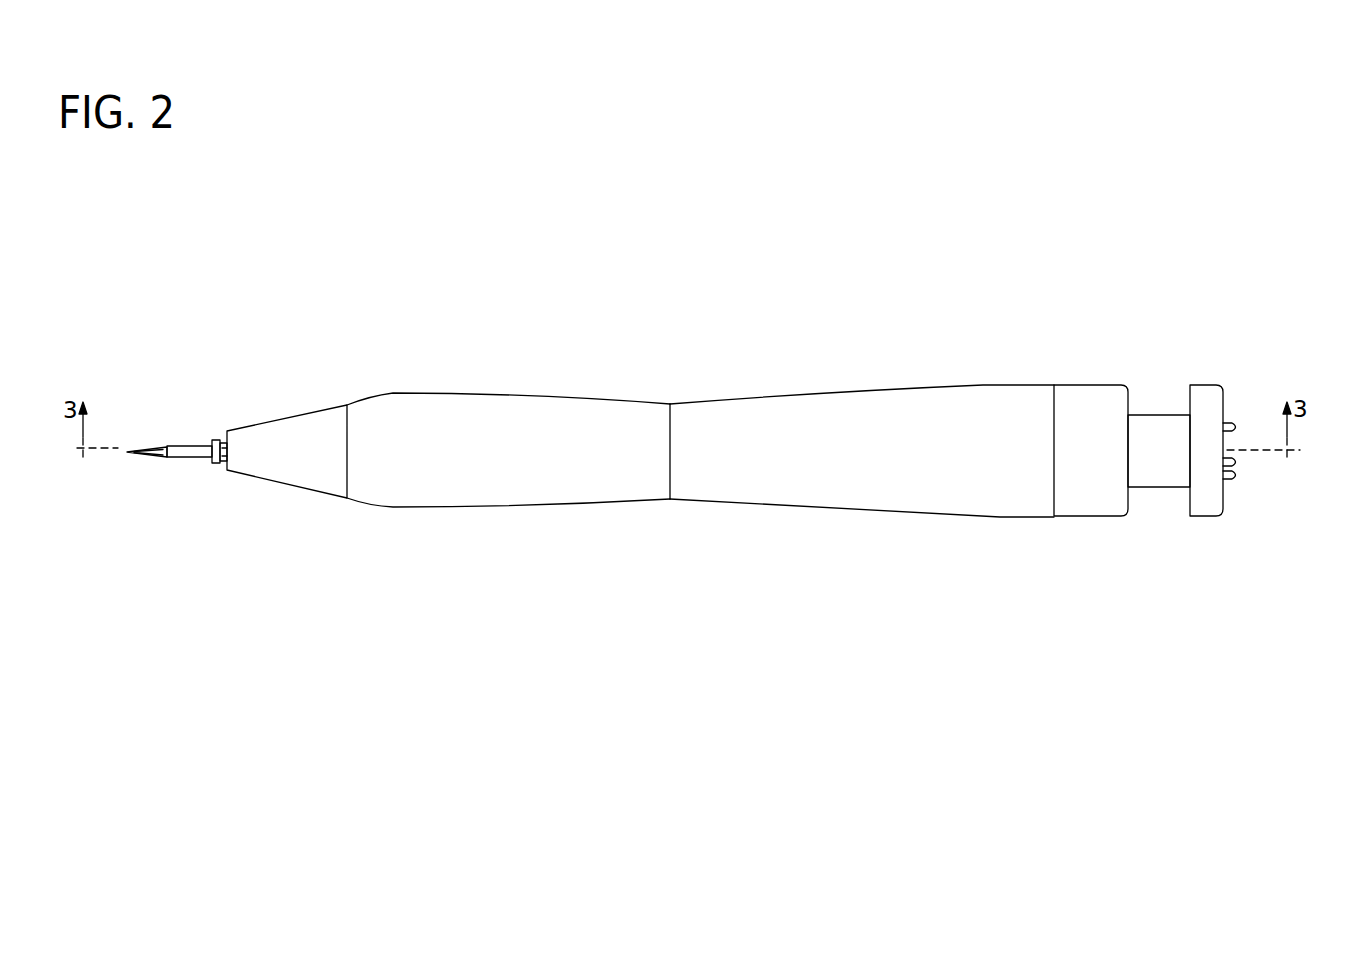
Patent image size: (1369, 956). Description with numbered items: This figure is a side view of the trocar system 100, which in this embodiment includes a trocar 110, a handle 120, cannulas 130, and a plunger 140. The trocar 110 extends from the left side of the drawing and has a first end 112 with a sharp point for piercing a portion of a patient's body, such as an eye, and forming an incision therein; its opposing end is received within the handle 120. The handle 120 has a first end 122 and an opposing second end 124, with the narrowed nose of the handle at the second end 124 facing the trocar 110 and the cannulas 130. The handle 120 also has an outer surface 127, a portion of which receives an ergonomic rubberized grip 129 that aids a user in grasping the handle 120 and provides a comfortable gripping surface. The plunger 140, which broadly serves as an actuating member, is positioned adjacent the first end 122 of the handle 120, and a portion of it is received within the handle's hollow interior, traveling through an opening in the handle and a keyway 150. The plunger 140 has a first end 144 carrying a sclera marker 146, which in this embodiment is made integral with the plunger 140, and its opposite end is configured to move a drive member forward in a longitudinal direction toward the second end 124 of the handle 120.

The trocar system 100 is at (552, 240).
The trocar 110 is at (178, 430).
The first end 112 is at (123, 452).
The handle 120 is at (773, 384).
The first end 122 is at (1056, 415).
The second end 124 is at (227, 471).
The outer surface 127 is at (900, 418).
The ergonomic rubberized grip 129 is at (438, 395).
The cannula 130 is at (222, 421).
The plunger 140 is at (1240, 530).
The first end 144 is at (1223, 492).
The sclera marker 146 is at (1227, 422).
The keyway 150 is at (1097, 485).